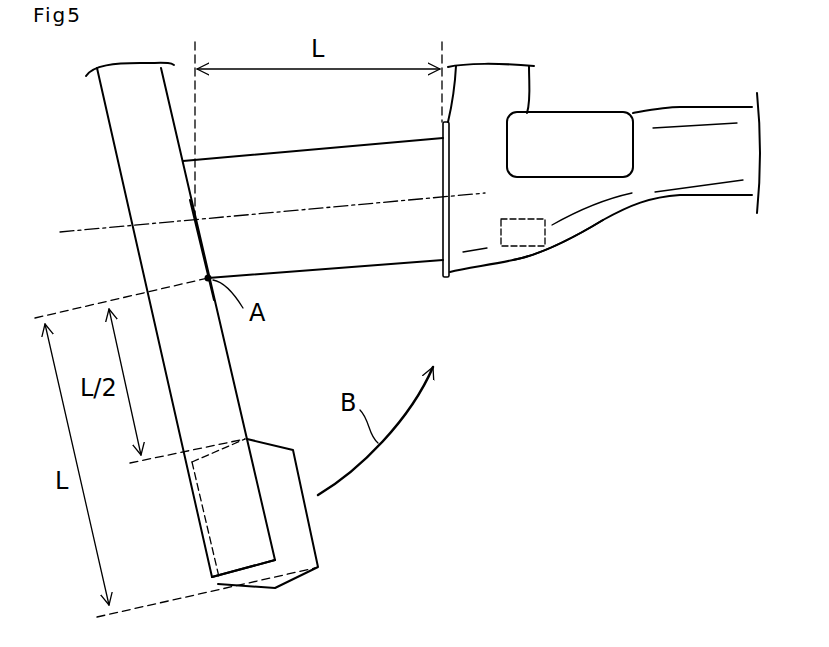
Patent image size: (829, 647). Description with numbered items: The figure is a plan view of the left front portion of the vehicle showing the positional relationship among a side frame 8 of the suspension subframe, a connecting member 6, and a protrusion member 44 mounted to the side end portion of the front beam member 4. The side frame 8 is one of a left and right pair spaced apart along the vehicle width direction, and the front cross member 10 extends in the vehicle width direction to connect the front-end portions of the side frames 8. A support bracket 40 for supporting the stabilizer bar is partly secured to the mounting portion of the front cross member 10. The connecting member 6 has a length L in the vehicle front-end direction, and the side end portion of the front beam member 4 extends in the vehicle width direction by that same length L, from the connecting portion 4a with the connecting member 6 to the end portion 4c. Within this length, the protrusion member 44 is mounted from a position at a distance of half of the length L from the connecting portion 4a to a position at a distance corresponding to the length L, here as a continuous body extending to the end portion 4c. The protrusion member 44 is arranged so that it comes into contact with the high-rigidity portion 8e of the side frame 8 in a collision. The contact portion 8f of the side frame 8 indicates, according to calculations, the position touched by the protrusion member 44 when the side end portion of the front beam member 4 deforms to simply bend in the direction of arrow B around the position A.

The front beam member 4 is at (118, 167).
The connecting portion 4a is at (200, 248).
The end portion 4c is at (213, 580).
The connecting member 6 is at (296, 150).
The side frame 8 is at (693, 200).
The high-rigidity portion 8e is at (603, 237).
The contact portion 8f is at (515, 246).
The front cross member 10 is at (527, 90).
The support bracket 40 is at (607, 112).
The protrusion member 44 is at (313, 520).